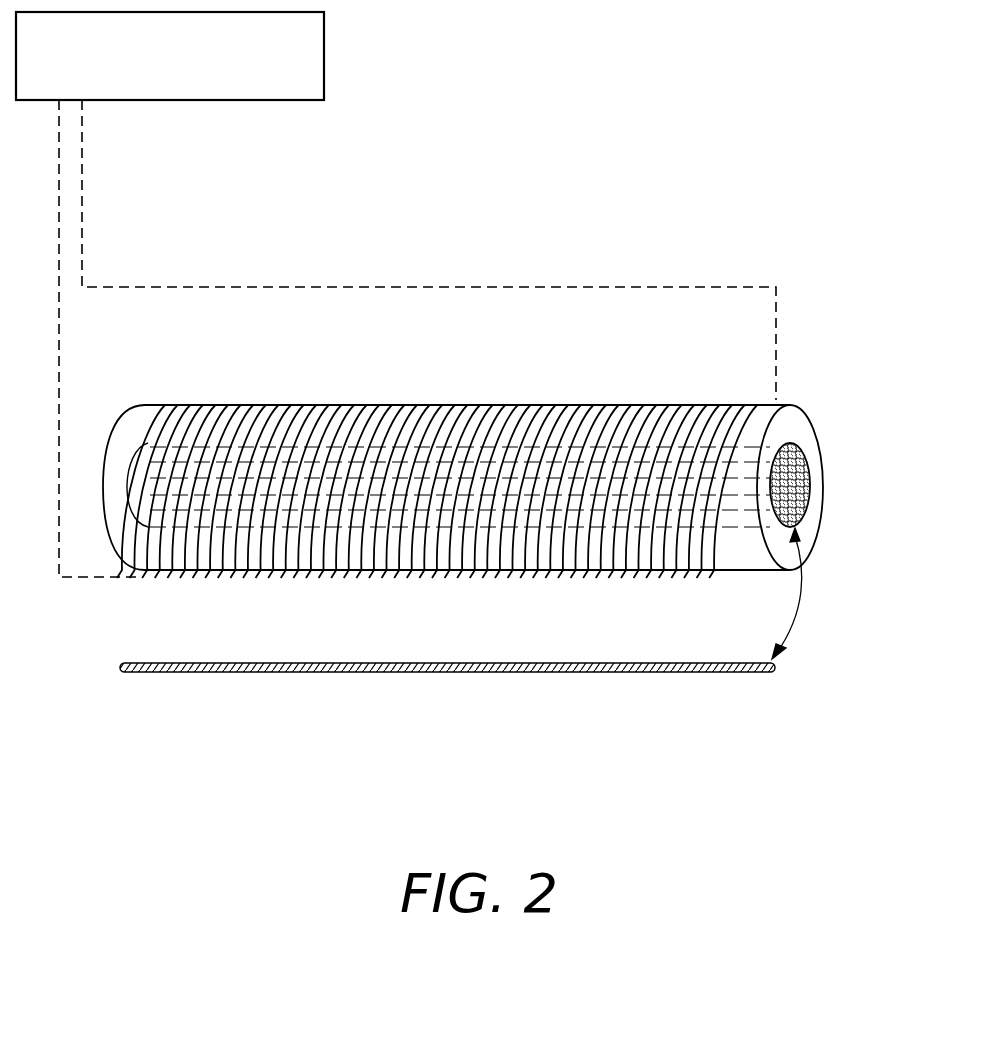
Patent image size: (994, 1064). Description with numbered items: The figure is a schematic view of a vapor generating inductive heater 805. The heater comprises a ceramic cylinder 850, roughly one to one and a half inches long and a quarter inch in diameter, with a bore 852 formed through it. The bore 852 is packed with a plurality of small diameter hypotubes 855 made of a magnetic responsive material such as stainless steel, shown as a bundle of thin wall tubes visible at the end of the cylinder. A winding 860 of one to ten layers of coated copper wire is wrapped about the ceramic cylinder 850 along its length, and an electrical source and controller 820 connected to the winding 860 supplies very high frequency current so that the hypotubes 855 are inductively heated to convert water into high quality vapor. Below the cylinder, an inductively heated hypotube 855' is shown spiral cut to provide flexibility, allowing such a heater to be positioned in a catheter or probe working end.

The electrical source and controller 820 is at (170, 56).
The vapor generating inductive heater 805 is at (657, 246).
The ceramic cylinder 850 is at (137, 422).
The winding 860 is at (473, 405).
The bore 852 is at (805, 446).
The hypotubes 855 is at (829, 532).
The spiral cut hypotube 855' is at (447, 640).